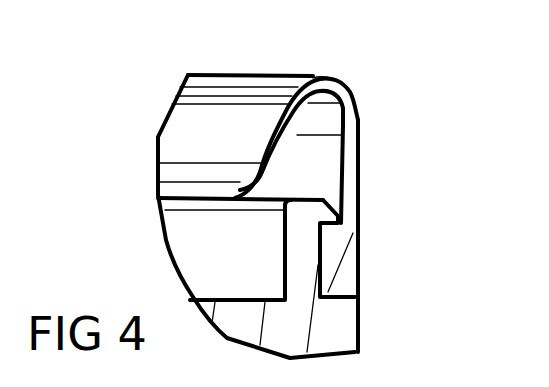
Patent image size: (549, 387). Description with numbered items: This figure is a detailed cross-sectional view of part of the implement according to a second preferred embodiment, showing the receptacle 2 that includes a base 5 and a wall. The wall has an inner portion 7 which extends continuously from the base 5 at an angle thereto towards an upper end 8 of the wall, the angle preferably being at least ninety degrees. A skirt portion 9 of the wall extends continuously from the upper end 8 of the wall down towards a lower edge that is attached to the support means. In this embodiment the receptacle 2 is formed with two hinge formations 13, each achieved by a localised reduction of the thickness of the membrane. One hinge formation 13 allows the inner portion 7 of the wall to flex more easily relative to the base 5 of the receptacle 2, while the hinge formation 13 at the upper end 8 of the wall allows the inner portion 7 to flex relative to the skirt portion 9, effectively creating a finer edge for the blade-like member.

The receptacle 2 is at (363, 147).
The base 5 is at (197, 192).
The inner portion 7 is at (283, 140).
The upper end 8 is at (347, 83).
The skirt portion 9 is at (347, 187).
The hinge formation 13 is at (250, 185).